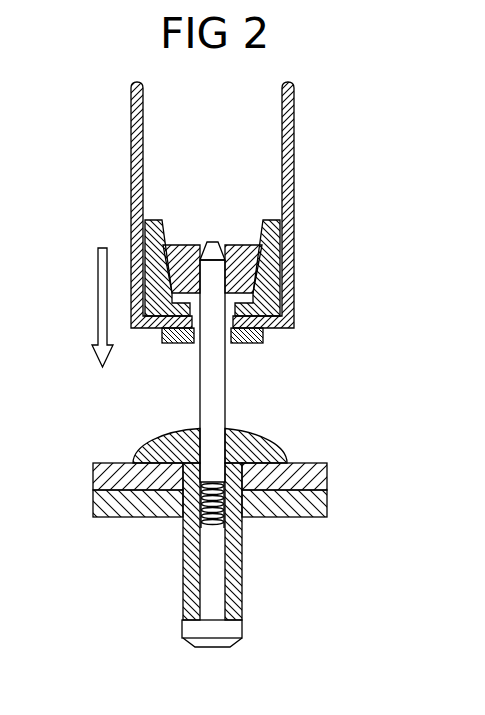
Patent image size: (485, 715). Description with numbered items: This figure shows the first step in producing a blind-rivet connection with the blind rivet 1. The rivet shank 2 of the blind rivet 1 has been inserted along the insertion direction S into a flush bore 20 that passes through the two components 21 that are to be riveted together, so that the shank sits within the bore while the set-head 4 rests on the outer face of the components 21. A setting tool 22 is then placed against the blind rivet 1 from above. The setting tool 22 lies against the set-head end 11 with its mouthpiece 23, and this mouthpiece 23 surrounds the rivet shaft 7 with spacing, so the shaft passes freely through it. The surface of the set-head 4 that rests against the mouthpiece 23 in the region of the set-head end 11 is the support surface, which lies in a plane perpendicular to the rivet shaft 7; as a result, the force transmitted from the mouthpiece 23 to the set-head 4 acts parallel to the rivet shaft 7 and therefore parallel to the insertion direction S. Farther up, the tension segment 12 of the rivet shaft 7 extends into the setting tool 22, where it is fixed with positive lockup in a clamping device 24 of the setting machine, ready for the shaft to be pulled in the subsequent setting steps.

The blind rivet 1 is at (267, 606).
The rivet shank 2 is at (235, 553).
The set-head 4 is at (163, 443).
The rivet shaft 7 is at (208, 392).
The set-head end 11 is at (236, 422).
The tension segment 12 is at (212, 247).
The flush bore 20 is at (172, 534).
The components 21 is at (327, 500).
The setting tool 22 is at (314, 132).
The mouthpiece 23 is at (250, 344).
The clamping device 24 is at (245, 252).
The insertion direction S is at (102, 283).